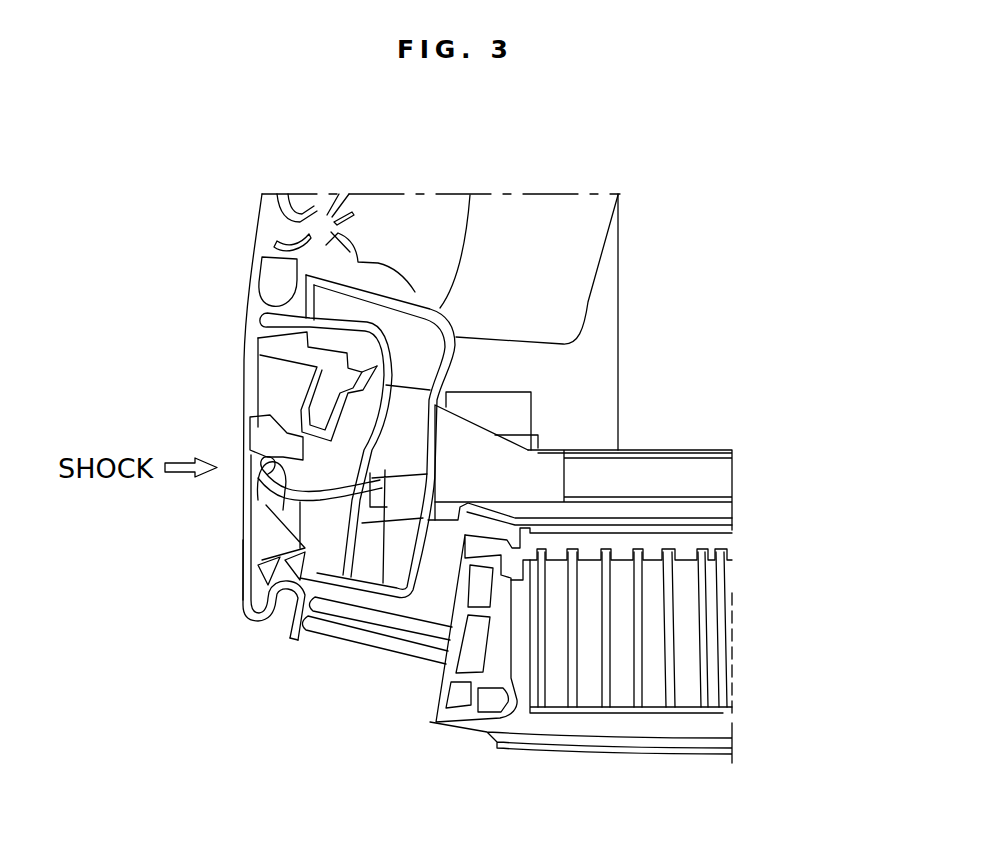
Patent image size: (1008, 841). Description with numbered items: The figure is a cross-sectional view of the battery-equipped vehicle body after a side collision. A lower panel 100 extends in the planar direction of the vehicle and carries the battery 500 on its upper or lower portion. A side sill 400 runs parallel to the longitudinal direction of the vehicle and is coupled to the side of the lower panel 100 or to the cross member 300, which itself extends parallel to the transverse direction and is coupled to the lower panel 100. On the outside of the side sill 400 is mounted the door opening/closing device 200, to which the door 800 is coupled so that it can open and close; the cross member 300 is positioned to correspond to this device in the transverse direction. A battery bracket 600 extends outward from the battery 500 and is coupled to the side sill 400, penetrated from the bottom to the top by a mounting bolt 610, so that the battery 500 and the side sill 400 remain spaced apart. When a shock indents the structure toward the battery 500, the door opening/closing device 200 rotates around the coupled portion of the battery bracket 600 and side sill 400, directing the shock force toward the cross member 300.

The lower panel 100 is at (693, 523).
The door opening/closing device 200 is at (272, 385).
The cross member 300 is at (670, 470).
The side sill 400 is at (383, 296).
The battery 500 is at (670, 623).
The battery bracket 600 is at (367, 647).
The mounting bolt 610 is at (362, 548).
The door 800 is at (257, 302).